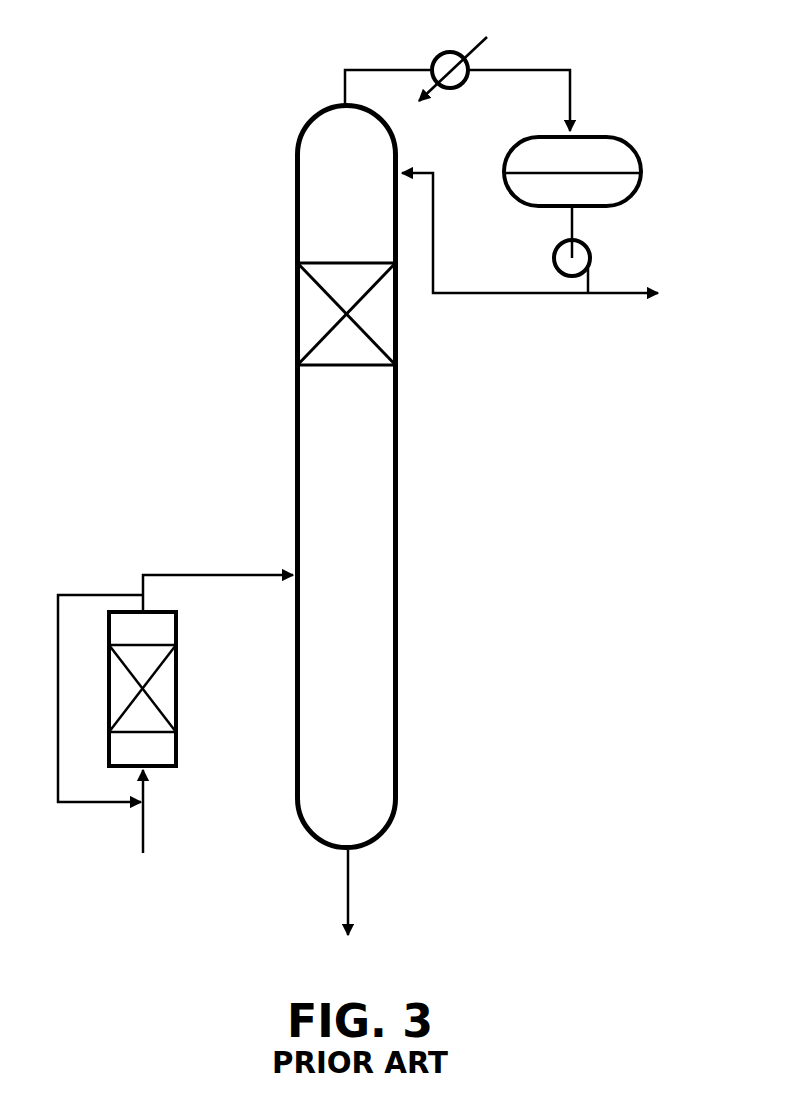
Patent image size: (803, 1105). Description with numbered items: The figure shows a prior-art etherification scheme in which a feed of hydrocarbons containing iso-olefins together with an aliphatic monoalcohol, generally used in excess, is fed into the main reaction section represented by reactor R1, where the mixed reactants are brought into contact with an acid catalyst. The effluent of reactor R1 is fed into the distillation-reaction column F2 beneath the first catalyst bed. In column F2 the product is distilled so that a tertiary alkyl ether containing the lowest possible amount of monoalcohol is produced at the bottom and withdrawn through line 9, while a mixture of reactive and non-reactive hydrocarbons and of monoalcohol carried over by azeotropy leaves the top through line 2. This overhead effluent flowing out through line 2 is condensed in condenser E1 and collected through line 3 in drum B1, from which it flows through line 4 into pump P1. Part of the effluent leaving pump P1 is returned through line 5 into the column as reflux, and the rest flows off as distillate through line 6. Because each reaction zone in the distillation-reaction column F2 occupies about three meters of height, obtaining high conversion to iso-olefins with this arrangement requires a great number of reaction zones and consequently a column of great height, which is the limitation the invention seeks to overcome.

The line 2 is at (362, 70).
The line 3 is at (537, 68).
The line 4 is at (574, 220).
The line 5 is at (453, 295).
The line 6 is at (623, 295).
The line 9 is at (347, 887).
The condenser E1 is at (443, 69).
The drum B1 is at (555, 168).
The pump P1 is at (556, 263).
The distillation-reaction column F2 is at (347, 477).
The reactor R1 is at (175, 714).